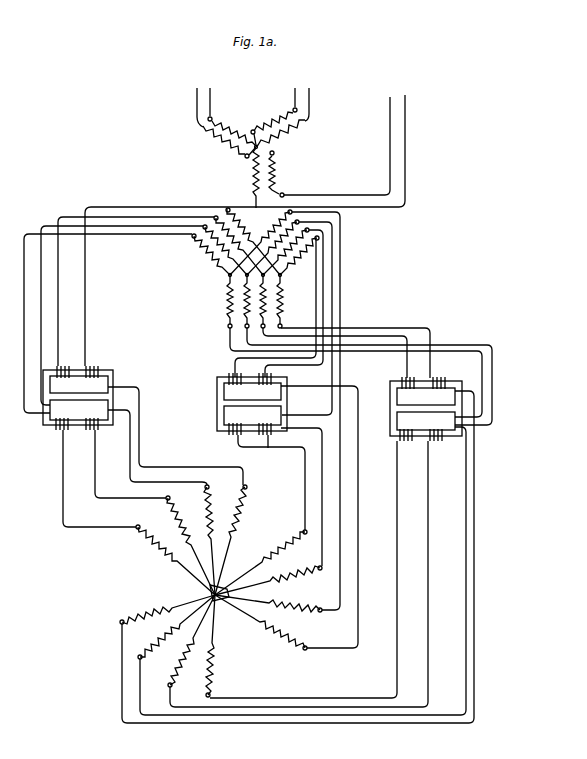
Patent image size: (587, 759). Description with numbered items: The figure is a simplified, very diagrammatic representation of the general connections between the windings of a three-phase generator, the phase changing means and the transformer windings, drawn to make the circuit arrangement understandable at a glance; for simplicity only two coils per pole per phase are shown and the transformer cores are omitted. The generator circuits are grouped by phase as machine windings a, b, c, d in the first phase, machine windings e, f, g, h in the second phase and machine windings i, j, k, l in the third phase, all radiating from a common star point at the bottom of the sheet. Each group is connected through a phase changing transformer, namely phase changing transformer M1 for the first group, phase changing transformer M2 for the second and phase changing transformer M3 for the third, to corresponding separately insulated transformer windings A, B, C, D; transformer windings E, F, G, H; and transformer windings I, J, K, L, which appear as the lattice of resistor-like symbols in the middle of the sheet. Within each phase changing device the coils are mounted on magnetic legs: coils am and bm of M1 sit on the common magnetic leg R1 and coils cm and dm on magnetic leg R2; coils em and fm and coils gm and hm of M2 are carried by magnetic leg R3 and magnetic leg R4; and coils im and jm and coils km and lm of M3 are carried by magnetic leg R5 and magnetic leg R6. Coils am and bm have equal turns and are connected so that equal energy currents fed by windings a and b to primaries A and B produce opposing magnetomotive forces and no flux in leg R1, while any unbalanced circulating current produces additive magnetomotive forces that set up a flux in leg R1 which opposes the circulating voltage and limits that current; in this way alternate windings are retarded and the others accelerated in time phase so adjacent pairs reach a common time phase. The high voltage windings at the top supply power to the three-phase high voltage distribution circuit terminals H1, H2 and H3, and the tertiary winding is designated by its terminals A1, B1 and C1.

The tertiary winding terminal A1 is at (197, 92).
The high voltage distribution circuit terminal H1 is at (214, 89).
The tertiary winding terminal B1 is at (295, 88).
The high voltage distribution circuit terminal H2 is at (313, 88).
The tertiary winding terminal C1 is at (389, 97).
The high voltage distribution circuit terminal H3 is at (409, 94).
The transformer primary winding A is at (192, 238).
The transformer primary winding B is at (203, 225).
The transformer primary winding C is at (214, 215).
The transformer primary winding D is at (228, 208).
The transformer primary winding E is at (288, 212).
The transformer primary winding F is at (333, 219).
The transformer primary winding G is at (324, 230).
The transformer primary winding H is at (320, 240).
The transformer primary winding I is at (227, 326).
The transformer primary winding J is at (245, 328).
The transformer primary winding K is at (261, 330).
The transformer primary winding L is at (282, 325).
The phase changing transformer M1 is at (109, 395).
The phase changing transformer M2 is at (283, 403).
The phase changing transformer M3 is at (457, 403).
The magnetic leg R1 is at (112, 427).
The magnetic leg R2 is at (112, 380).
The magnetic leg R3 is at (290, 429).
The magnetic leg R4 is at (292, 386).
The magnetic leg R5 is at (462, 440).
The magnetic leg R6 is at (457, 389).
The phase changing coil am is at (59, 431).
The phase changing coil bm is at (92, 431).
The phase changing coil cm is at (60, 367).
The phase changing coil dm is at (91, 367).
The phase changing coil em is at (232, 433).
The phase changing coil fm is at (269, 444).
The phase changing coil gm is at (237, 375).
The phase changing coil hm is at (270, 376).
The phase changing coil im is at (403, 441).
The phase changing coil jm is at (436, 441).
The phase changing coil km is at (404, 379).
The phase changing coil lm is at (438, 379).
The machine winding a is at (136, 528).
The machine winding b is at (166, 499).
The machine winding c is at (205, 488).
The machine winding d is at (243, 487).
The machine winding e is at (304, 531).
The machine winding f is at (319, 567).
The machine winding g is at (321, 609).
The machine winding h is at (307, 648).
The machine winding i is at (210, 695).
The machine winding j is at (172, 686).
The machine winding k is at (142, 658).
The machine winding l is at (121, 621).